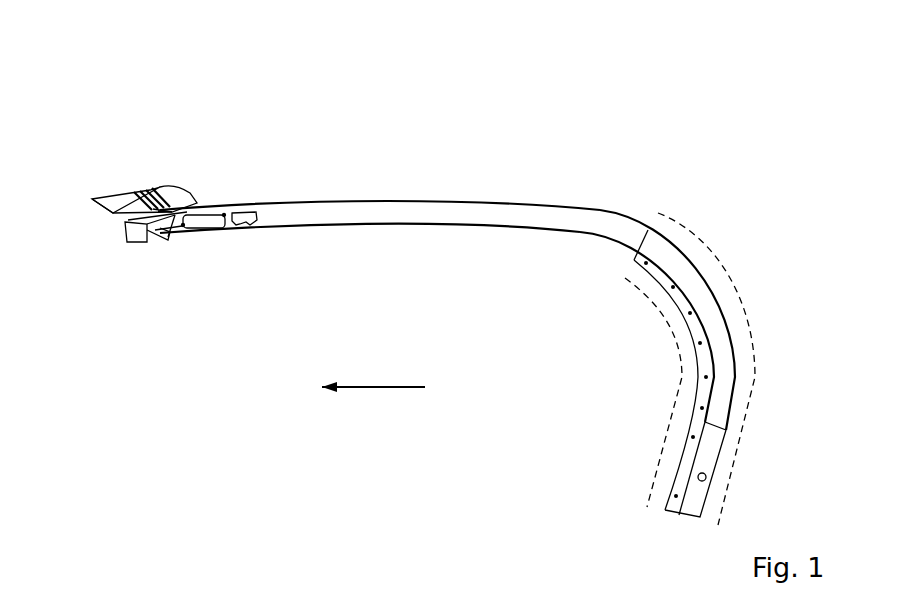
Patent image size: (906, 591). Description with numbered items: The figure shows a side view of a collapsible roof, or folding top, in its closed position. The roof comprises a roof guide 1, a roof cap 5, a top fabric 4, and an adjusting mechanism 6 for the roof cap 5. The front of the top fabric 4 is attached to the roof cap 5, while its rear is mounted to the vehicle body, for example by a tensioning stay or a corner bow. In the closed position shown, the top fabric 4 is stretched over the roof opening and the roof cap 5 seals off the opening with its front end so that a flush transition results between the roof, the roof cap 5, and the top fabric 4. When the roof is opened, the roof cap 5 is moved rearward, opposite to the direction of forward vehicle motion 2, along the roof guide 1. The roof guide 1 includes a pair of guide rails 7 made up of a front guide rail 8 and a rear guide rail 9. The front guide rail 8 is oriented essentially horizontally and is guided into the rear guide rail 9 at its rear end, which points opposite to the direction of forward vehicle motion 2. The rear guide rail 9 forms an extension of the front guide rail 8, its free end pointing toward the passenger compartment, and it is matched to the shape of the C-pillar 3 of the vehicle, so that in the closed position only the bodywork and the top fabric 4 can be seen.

The roof guide 1 is at (440, 264).
The direction of forward vehicle motion 2 is at (379, 387).
The C-pillar 3 is at (727, 273).
The top fabric 4 is at (168, 194).
The roof cap 5 is at (119, 202).
The adjusting mechanism 6 is at (197, 255).
The guide rails 7 is at (577, 208).
The front guide rail 8 is at (320, 215).
The rear guide rail 9 is at (723, 366).